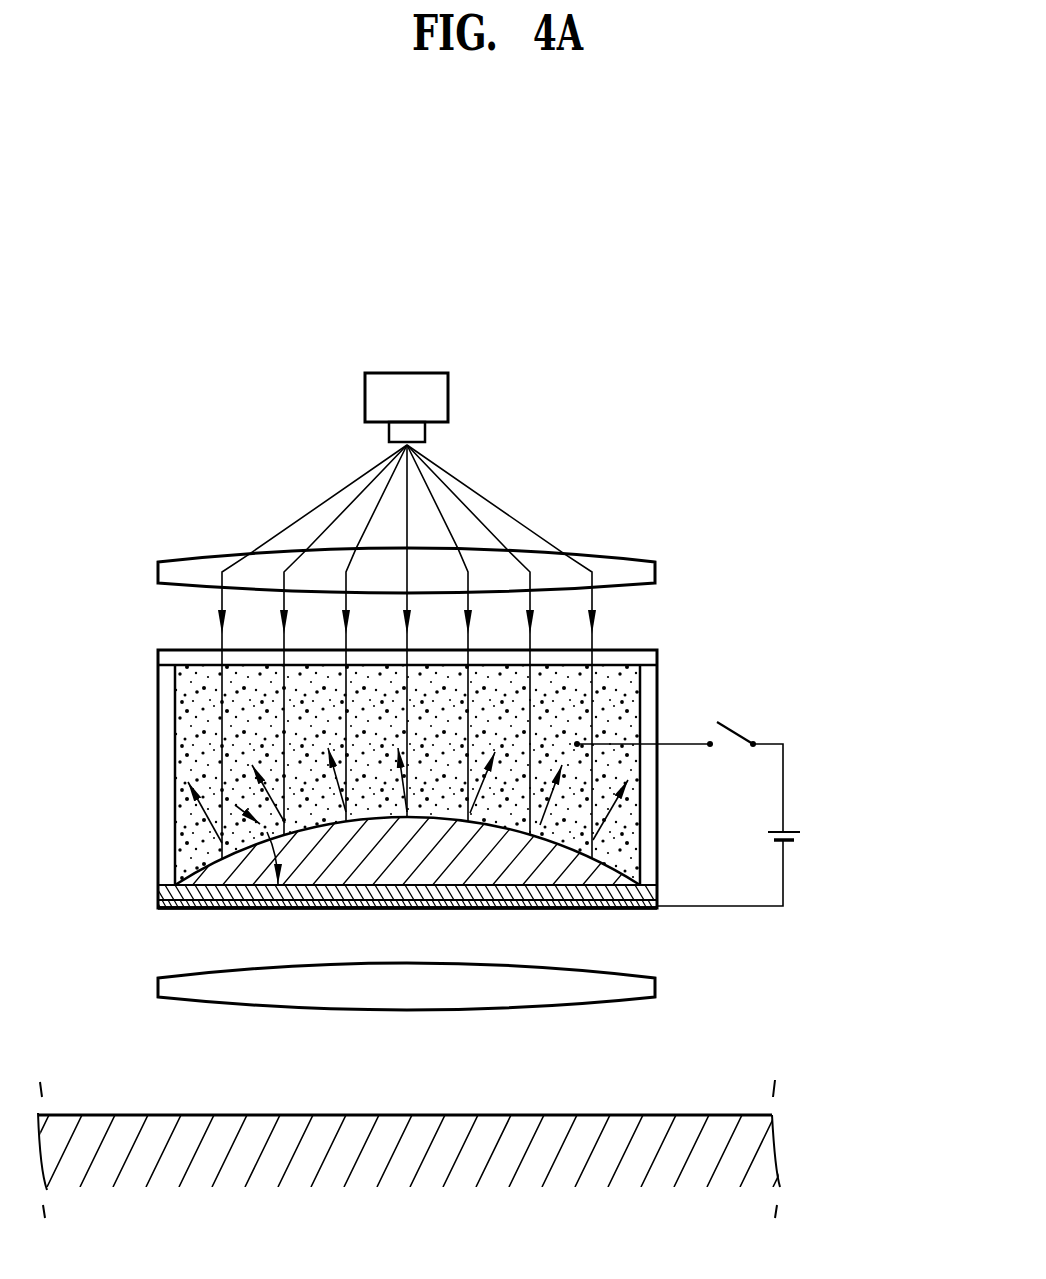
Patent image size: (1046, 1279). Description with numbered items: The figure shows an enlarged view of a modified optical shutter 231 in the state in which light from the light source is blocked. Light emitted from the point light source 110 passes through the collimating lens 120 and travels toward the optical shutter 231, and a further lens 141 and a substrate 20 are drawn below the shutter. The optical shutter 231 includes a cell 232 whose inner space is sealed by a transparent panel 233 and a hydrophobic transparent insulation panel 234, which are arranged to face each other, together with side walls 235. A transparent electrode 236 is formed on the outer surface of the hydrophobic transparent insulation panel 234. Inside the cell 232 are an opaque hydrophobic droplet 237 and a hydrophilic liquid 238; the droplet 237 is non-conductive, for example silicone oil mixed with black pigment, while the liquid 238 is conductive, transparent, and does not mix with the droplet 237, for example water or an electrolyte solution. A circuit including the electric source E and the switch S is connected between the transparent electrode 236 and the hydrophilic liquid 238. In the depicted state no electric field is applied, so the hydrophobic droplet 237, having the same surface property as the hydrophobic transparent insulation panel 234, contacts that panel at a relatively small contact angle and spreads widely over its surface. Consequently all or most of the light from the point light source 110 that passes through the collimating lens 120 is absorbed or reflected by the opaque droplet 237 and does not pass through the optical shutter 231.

The point light source 110 is at (448, 398).
The collimating lens 120 is at (633, 570).
The projection lens 141 is at (633, 988).
The screen substrate 20 is at (659, 1150).
The optical shutter 231 is at (768, 575).
The cell 232 is at (663, 678).
The transparent panel 233 is at (168, 660).
The hydrophobic transparent insulation panel 234 is at (160, 907).
The side walls 235 is at (168, 772).
The transparent electrode 236 is at (187, 910).
The opaque droplet 237 is at (163, 886).
The liquid 238 is at (207, 713).
The switch S is at (752, 722).
The electric source E is at (805, 835).